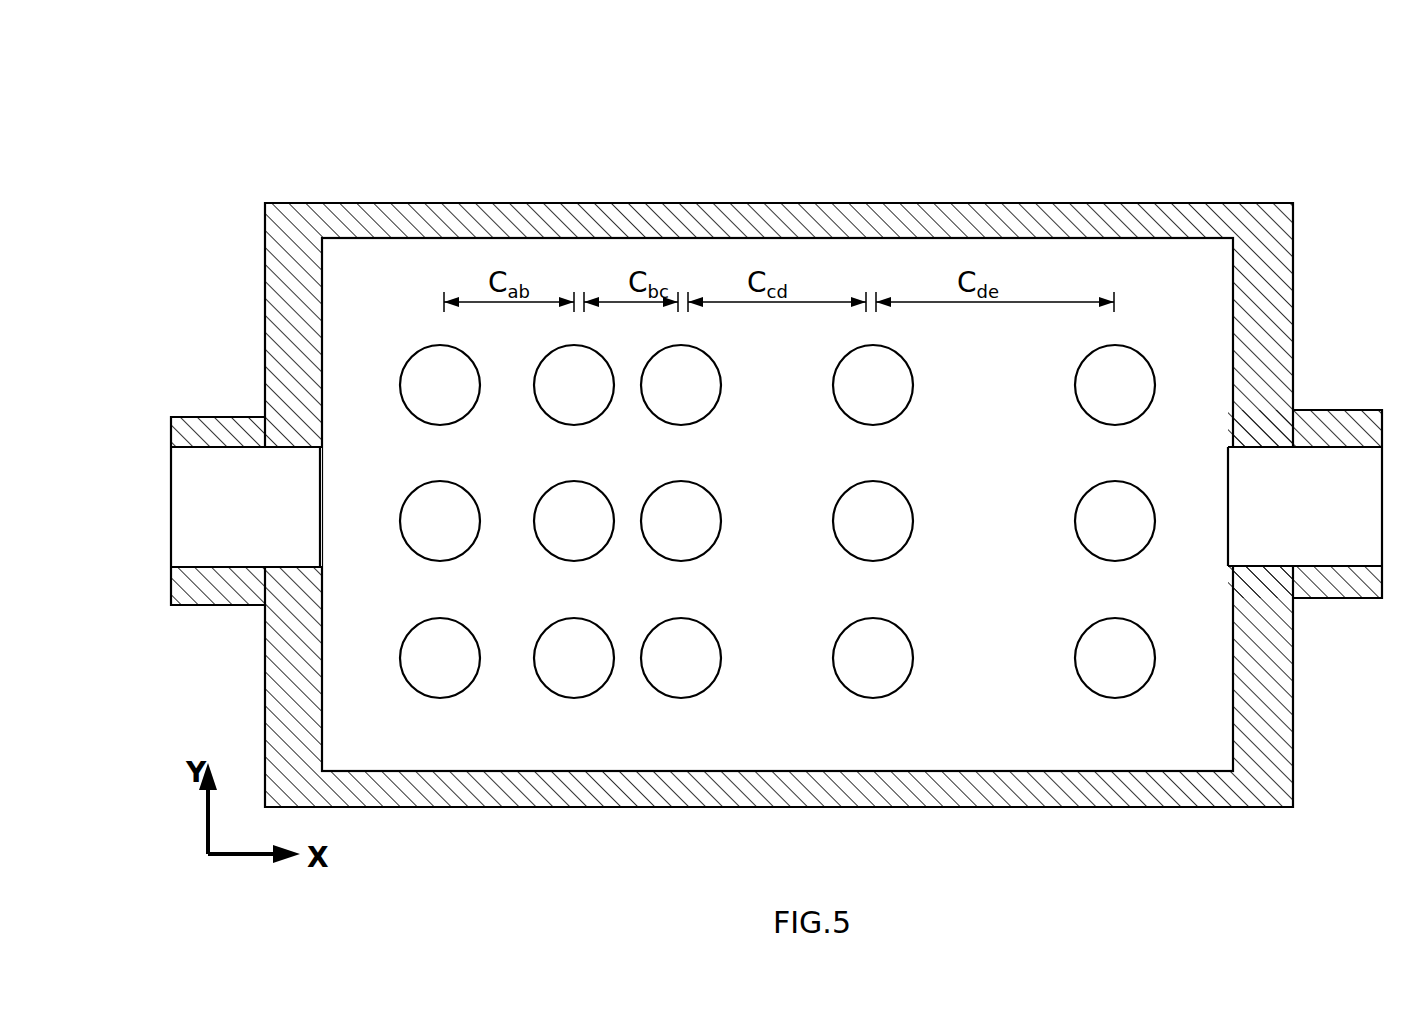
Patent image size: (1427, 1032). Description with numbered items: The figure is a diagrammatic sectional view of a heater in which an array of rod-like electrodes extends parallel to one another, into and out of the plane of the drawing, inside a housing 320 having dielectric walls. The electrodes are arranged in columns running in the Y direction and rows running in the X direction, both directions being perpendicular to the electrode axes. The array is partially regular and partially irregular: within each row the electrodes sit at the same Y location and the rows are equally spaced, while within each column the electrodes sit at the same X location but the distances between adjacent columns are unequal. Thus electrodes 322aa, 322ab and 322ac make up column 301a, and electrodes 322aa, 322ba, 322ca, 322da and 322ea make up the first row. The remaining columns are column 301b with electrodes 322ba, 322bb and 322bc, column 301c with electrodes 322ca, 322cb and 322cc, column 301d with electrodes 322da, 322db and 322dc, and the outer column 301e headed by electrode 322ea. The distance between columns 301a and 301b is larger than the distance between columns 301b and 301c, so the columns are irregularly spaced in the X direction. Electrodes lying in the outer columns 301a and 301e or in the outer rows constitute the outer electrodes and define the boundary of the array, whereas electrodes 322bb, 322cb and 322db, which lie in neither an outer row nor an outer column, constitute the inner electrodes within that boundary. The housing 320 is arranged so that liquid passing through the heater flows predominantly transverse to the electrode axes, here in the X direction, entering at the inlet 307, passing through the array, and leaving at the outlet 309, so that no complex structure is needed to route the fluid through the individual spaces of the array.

The housing 320 is at (922, 193).
The inlet 307 is at (252, 497).
The outlet 309 is at (1286, 465).
The column 301a is at (314, 516).
The column 301b is at (534, 498).
The column 301c is at (655, 473).
The column 301d is at (825, 611).
The column 301e is at (1061, 612).
The electrode 322aa is at (432, 392).
The electrode 322ab is at (413, 521).
The electrode 322ac is at (420, 647).
The electrode 322ba is at (590, 400).
The electrode 322bb is at (575, 518).
The electrode 322bc is at (553, 632).
The electrode 322ca is at (712, 390).
The electrode 322cb is at (702, 522).
The electrode 322cc is at (680, 636).
The electrode 322da is at (857, 395).
The electrode 322db is at (890, 520).
The electrode 322dc is at (869, 715).
The electrode 322ea is at (1087, 398).